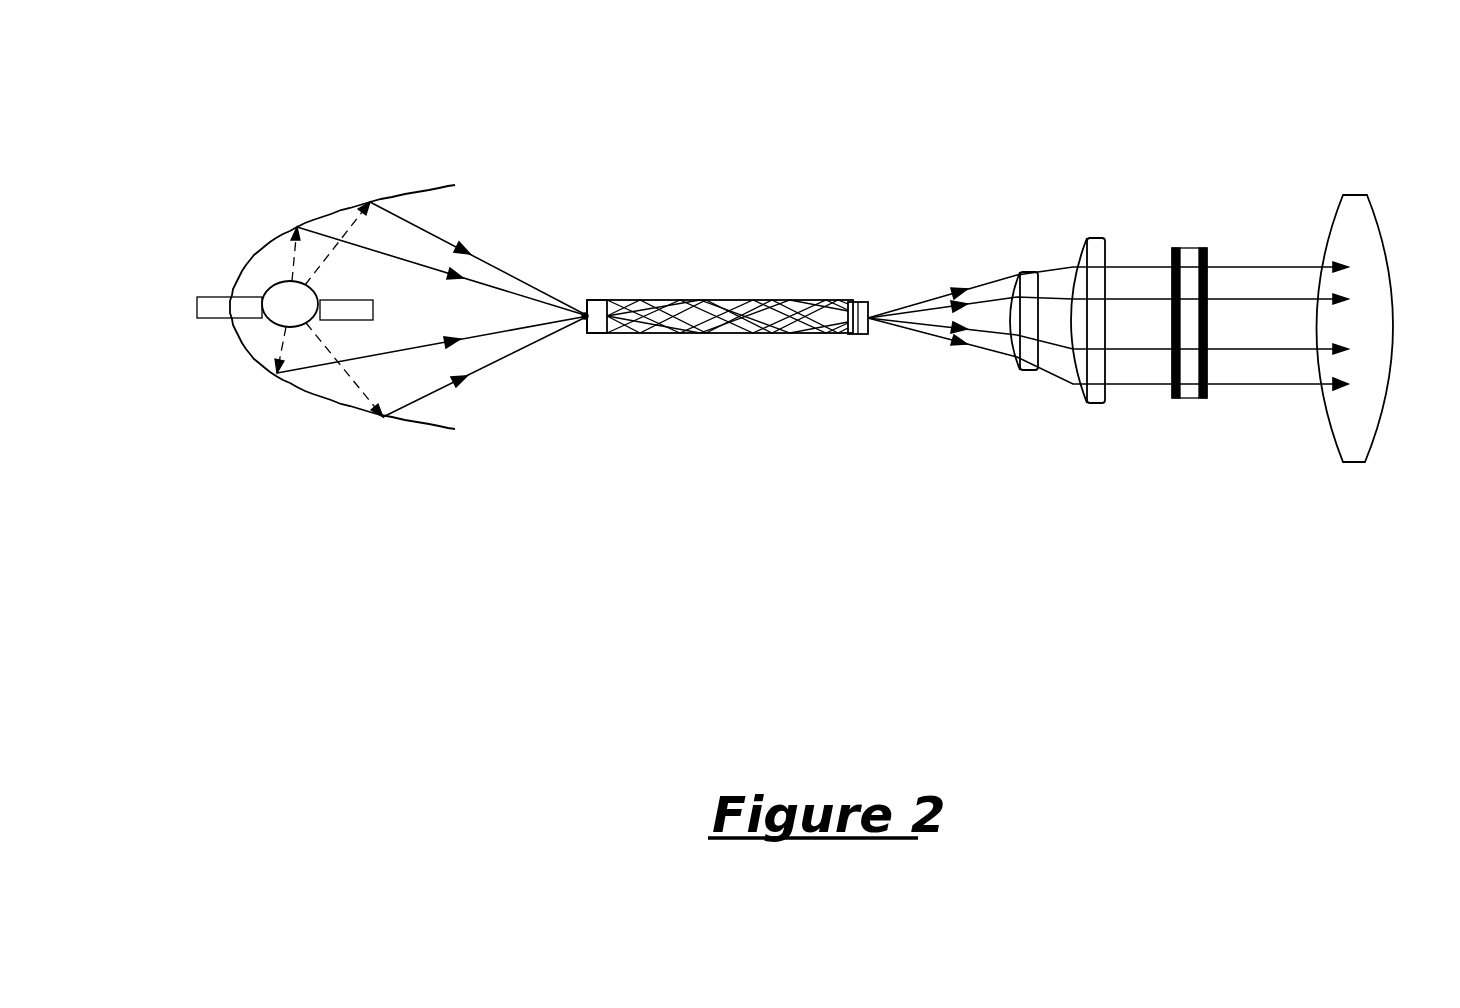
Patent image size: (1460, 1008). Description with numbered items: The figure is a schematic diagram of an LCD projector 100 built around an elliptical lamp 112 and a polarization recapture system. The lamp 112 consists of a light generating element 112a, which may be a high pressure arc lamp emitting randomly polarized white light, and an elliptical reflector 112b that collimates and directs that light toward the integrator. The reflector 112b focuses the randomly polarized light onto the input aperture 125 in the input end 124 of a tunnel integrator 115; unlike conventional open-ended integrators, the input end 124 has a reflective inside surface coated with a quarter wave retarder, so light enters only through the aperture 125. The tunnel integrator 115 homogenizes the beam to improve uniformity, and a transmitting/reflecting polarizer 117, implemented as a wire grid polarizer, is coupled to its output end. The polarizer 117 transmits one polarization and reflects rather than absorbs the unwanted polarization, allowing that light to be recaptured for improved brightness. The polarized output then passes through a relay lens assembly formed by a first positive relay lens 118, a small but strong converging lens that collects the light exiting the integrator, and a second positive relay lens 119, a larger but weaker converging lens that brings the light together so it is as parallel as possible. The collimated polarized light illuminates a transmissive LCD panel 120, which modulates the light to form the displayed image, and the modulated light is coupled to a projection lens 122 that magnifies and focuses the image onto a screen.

The LCD projector 100 is at (345, 126).
The elliptical lamp 112 is at (288, 418).
The light generating element 112a is at (208, 320).
The elliptical reflector 112b is at (423, 430).
The tunnel integrator 115 is at (693, 335).
The transmitting/reflecting polarizer 117 is at (855, 337).
The first positive relay lens 118 is at (1030, 372).
The second positive relay lens 119 is at (1093, 405).
The LCD panel 120 is at (1187, 400).
The projection lens 122 is at (1373, 443).
The input end 124 is at (602, 300).
The input aperture 125 is at (583, 318).